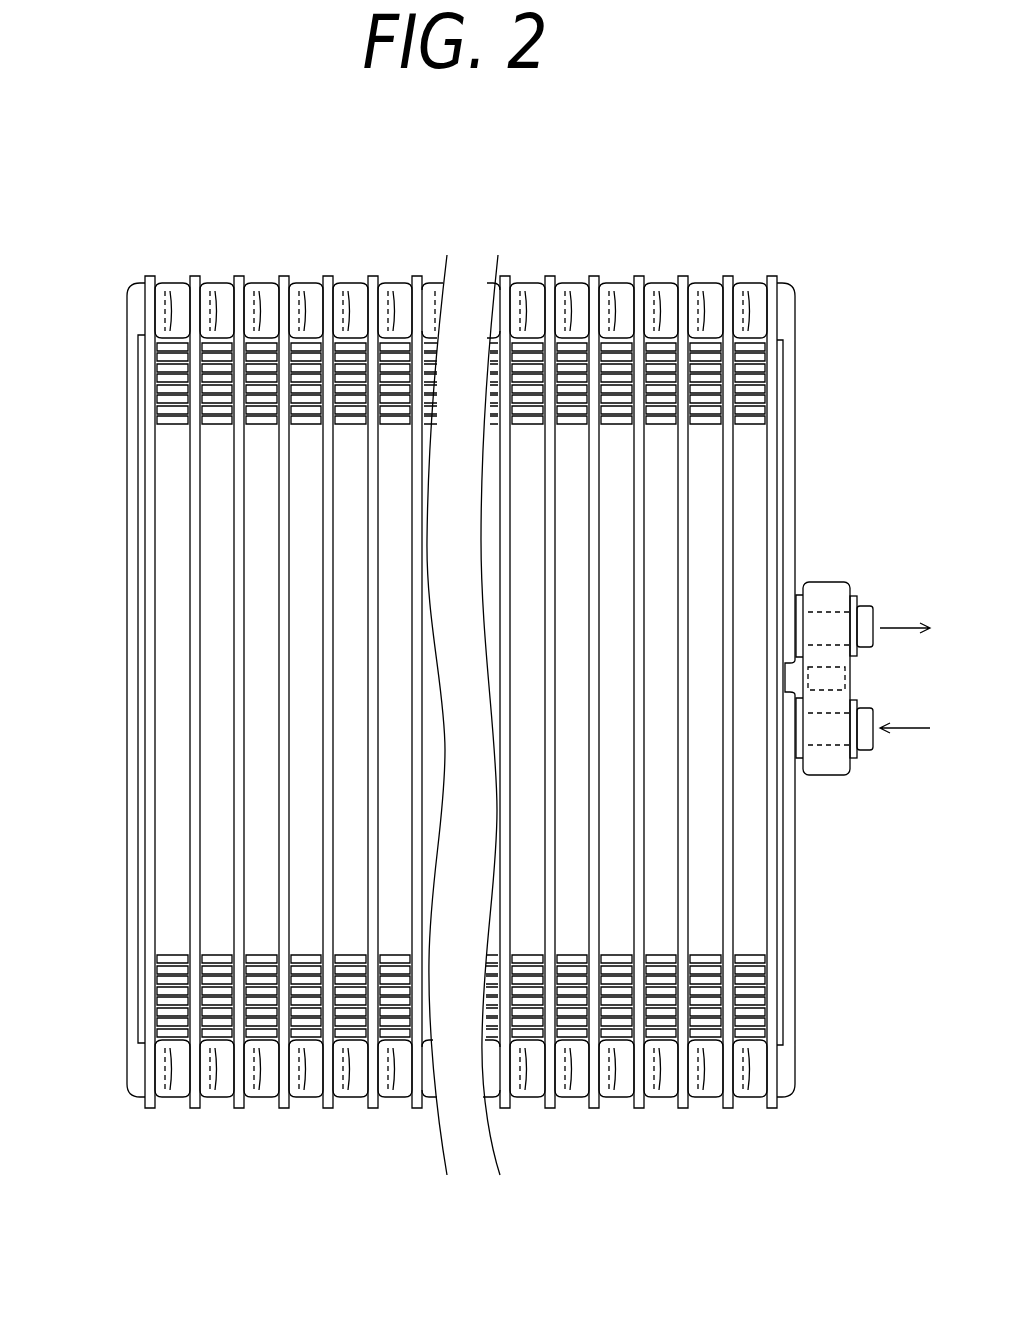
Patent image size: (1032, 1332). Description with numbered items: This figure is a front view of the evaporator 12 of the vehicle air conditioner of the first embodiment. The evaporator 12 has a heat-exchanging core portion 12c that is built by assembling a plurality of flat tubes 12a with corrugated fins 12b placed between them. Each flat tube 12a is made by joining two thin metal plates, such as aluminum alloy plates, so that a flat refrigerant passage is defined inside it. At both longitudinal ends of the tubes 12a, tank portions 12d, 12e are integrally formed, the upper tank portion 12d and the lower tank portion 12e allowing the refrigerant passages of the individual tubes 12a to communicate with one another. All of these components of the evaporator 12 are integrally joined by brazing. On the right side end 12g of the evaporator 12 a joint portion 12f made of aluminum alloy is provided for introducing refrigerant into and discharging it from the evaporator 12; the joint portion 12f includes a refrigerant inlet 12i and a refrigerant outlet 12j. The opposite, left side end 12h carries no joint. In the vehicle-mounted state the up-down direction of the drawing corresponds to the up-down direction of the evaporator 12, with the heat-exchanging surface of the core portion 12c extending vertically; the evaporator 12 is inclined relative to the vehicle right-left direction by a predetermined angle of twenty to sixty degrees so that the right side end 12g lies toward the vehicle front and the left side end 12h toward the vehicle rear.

The evaporator 12 is at (524, 244).
The flat tube 12a is at (724, 478).
The corrugated fin 12b is at (752, 430).
The heat-exchanging core portion 12c is at (668, 814).
The tank portion 12d is at (627, 290).
The tank portion 12e is at (603, 1078).
The joint portion 12f is at (850, 679).
The right side end 12g is at (797, 392).
The left side end 12h is at (128, 515).
The refrigerant inlet 12i is at (866, 757).
The refrigerant outlet 12j is at (866, 602).